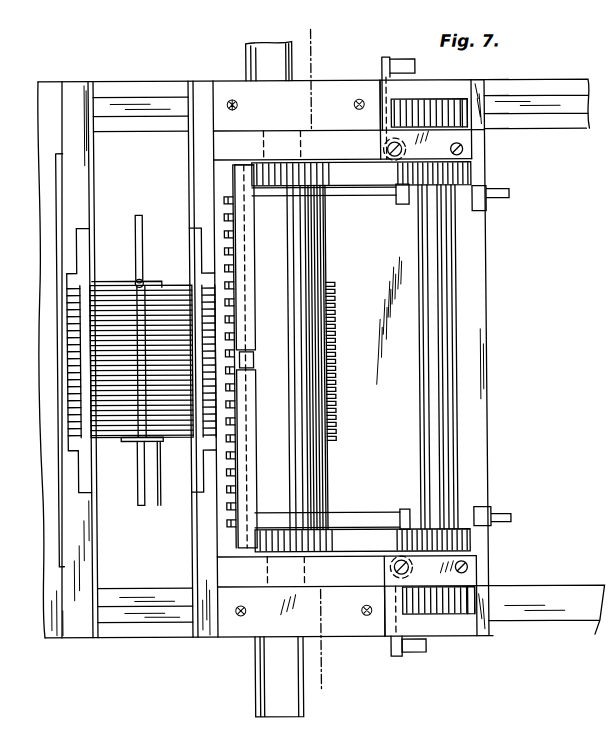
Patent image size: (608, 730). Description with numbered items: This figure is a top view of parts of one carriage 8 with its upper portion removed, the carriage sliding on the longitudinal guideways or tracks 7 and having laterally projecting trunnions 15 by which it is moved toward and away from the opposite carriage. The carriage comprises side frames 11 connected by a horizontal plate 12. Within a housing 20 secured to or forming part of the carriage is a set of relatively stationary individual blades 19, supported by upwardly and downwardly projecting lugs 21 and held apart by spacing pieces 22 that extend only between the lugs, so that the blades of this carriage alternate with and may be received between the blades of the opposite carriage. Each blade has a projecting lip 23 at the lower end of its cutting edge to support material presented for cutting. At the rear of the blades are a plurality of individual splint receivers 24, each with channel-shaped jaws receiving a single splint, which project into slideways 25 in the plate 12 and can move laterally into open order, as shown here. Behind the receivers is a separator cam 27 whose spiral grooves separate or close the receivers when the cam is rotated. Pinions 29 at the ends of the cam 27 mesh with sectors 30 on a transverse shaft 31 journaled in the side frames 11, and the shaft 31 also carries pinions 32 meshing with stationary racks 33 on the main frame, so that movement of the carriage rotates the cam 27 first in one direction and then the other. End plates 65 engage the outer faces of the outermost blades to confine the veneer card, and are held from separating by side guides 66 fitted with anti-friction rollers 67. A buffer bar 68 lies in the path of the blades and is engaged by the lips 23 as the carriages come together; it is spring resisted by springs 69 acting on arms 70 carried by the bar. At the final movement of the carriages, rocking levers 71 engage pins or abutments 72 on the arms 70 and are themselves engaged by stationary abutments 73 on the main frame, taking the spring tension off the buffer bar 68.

The longitudinal guideways or tracks 7 is at (538, 108).
The carriage 8 is at (410, 358).
The side frames 11 is at (430, 88).
The horizontal plate 12 is at (395, 357).
The trunnions 15 is at (252, 661).
The individual blades 19 is at (141, 361).
The housing 20 is at (139, 359).
The lugs 21 is at (72, 433).
The spacing pieces 22 is at (66, 380).
The projecting lip 23 is at (130, 483).
The individual splint receivers 24 is at (235, 284).
The slideways 25 is at (254, 328).
The separator cam 27 is at (253, 361).
The pinions 29 is at (304, 143).
The sectors 30 is at (363, 357).
The transverse shaft 31 is at (445, 302).
The pinions 32 is at (468, 108).
The stationary racks 33 is at (395, 100).
The end plates 65 is at (106, 282).
The side guides 66 is at (141, 262).
The anti-friction rollers 67 is at (141, 282).
The buffer bar 68 is at (255, 493).
The springs 69 is at (490, 215).
The arms 70 is at (366, 200).
The rocking levers 71 is at (390, 682).
The pins or abutments 72 is at (408, 206).
The stationary abutments 73 is at (423, 684).